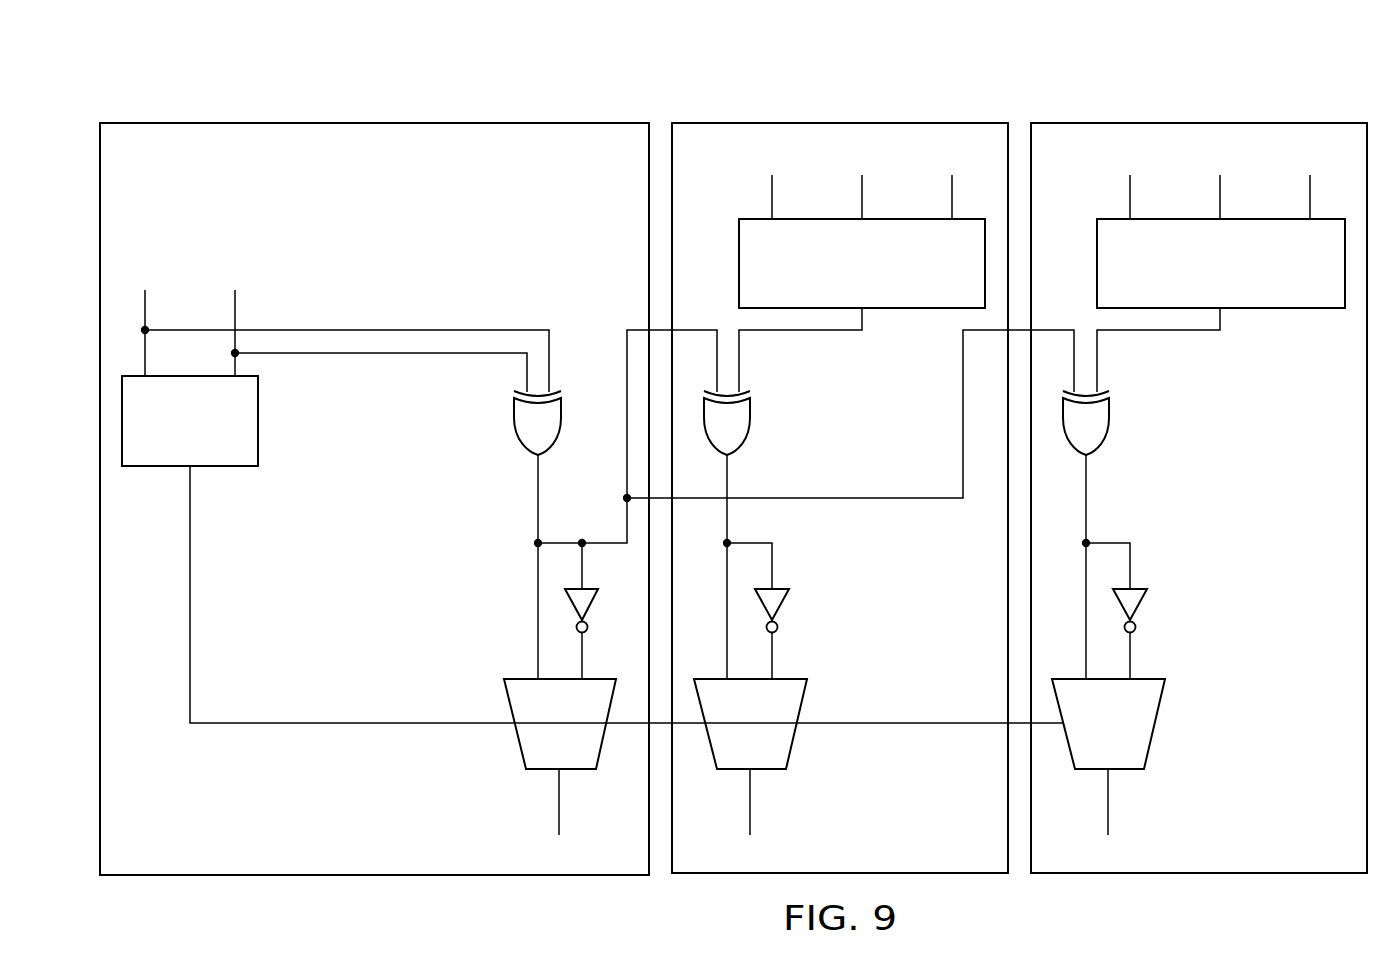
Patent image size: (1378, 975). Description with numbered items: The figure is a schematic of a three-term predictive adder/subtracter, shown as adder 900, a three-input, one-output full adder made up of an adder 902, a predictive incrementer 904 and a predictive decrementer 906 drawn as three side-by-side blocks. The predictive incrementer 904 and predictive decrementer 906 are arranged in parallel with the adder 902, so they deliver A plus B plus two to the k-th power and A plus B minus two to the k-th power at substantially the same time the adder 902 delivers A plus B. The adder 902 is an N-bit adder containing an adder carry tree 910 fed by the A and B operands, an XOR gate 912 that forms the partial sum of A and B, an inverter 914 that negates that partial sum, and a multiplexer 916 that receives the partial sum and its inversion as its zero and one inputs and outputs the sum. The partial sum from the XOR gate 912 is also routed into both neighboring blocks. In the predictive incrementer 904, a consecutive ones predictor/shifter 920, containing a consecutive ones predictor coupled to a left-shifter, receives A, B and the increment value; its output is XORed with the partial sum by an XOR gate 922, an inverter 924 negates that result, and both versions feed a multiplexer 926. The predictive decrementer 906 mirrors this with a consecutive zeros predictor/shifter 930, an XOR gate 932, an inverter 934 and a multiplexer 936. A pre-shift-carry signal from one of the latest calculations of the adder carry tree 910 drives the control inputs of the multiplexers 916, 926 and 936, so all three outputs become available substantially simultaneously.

The adder 900 is at (500, 72).
The adder 902 is at (296, 123).
The predictive incrementer 904 is at (878, 122).
The predictive decrementer 906 is at (1236, 122).
The adder carry tree 910 is at (157, 467).
The XOR gate 912 is at (513, 423).
The inverter 914 is at (592, 607).
The multiplexer 916 is at (580, 752).
The consecutive ones predictor/shifter 920 is at (912, 309).
The XOR gate 922 is at (752, 420).
The inverter 924 is at (781, 604).
The multiplexer 926 is at (772, 752).
The consecutive zeros predictor/shifter 930 is at (1268, 309).
The XOR gate 932 is at (1110, 420).
The inverter 934 is at (1141, 604).
The multiplexer 936 is at (1130, 752).